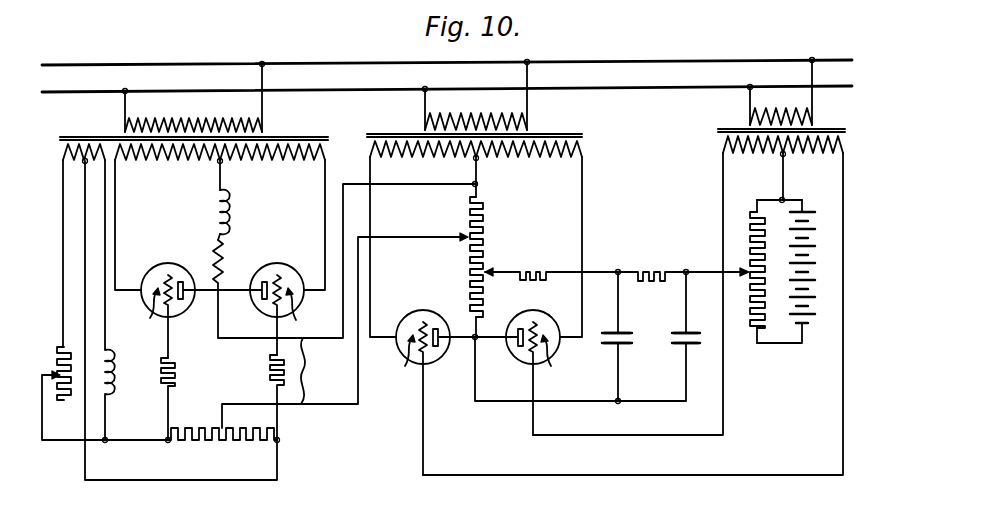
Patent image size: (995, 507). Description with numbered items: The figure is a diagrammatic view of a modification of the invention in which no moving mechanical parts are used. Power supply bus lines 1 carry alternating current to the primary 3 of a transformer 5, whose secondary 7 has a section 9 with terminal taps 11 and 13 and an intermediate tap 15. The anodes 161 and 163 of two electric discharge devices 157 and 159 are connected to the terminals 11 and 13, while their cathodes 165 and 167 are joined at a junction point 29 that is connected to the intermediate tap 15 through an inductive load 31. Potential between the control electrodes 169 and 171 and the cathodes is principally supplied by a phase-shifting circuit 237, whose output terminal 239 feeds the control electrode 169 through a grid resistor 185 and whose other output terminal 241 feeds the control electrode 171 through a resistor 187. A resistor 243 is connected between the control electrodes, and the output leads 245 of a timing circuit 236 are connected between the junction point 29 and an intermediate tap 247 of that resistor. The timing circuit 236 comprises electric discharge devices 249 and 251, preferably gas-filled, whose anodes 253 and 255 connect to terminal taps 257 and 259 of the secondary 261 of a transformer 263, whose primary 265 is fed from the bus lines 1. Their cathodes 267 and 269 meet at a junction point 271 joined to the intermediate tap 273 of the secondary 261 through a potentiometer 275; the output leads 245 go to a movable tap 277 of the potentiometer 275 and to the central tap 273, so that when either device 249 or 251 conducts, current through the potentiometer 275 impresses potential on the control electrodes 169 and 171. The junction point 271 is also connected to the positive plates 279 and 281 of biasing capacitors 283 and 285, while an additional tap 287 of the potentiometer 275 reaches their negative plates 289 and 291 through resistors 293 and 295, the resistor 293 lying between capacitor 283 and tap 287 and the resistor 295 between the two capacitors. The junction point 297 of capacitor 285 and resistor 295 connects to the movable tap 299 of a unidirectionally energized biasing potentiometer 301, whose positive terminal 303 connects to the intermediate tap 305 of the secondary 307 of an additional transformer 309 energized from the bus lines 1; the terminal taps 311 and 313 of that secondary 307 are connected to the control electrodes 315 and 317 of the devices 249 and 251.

The power supply bus lines 1 is at (393, 66).
The primary 3 is at (262, 128).
The transformer 5 is at (330, 126).
The secondary 7 is at (48, 161).
The secondary section 9 is at (163, 162).
The terminal tap 11 is at (118, 164).
The terminal tap 13 is at (322, 162).
The intermediate tap 15 is at (222, 164).
The junction point 29 is at (219, 290).
The inductive power-consuming load 31 is at (257, 213).
The electric discharge device 157 is at (148, 272).
The electric discharge device 159 is at (274, 270).
The anode 161 is at (150, 318).
The anode 163 is at (296, 320).
The cathode 165 is at (185, 312).
The cathode 167 is at (258, 312).
The control electrode 169 is at (168, 272).
The control electrode 171 is at (284, 272).
The grid resistor 185 is at (176, 372).
The resistor 187 is at (270, 368).
The timing circuit 236 is at (670, 227).
The phase-shifting circuit 237 is at (58, 261).
The output terminal 239 is at (107, 438).
The output terminal 241 is at (82, 163).
The resistor 243 is at (200, 447).
The output leads 245 is at (346, 294).
The intermediate tap 247 is at (221, 420).
The electric discharge device 249 is at (406, 312).
The electric discharge device 251 is at (526, 310).
The anode 253 is at (405, 365).
The anode 255 is at (550, 360).
The terminal tap 257 is at (372, 164).
The terminal tap 259 is at (580, 164).
The secondary 261 is at (584, 150).
The transformer 263 is at (622, 127).
The primary 265 is at (527, 122).
The cathode 267 is at (427, 318).
The cathode 269 is at (514, 352).
The junction point 271 is at (490, 326).
The intermediate tap 273 is at (478, 164).
The potentiometer 275 is at (535, 236).
The movable tap 277 is at (458, 236).
The positive plate 279 is at (620, 346).
The positive plate 281 is at (680, 346).
The biasing-potential capacitor 283 is at (666, 345).
The biasing-potential capacitor 285 is at (724, 367).
The intermediate tap 287 is at (490, 270).
The negative plate 289 is at (622, 332).
The negative plate 291 is at (688, 332).
The resistor 293 is at (540, 270).
The resistor 295 is at (640, 270).
The junction point 297 is at (672, 270).
The movable tap 299 is at (744, 276).
The biasing potentiometer 301 is at (795, 339).
The positive terminal 303 is at (788, 200).
The intermediate tap 305 is at (781, 162).
The secondary 307 is at (842, 140).
The transformer 309 is at (858, 117).
The terminal tap 311 is at (841, 162).
The terminal tap 313 is at (721, 162).
The control electrode 315 is at (440, 352).
The control electrode 317 is at (538, 316).